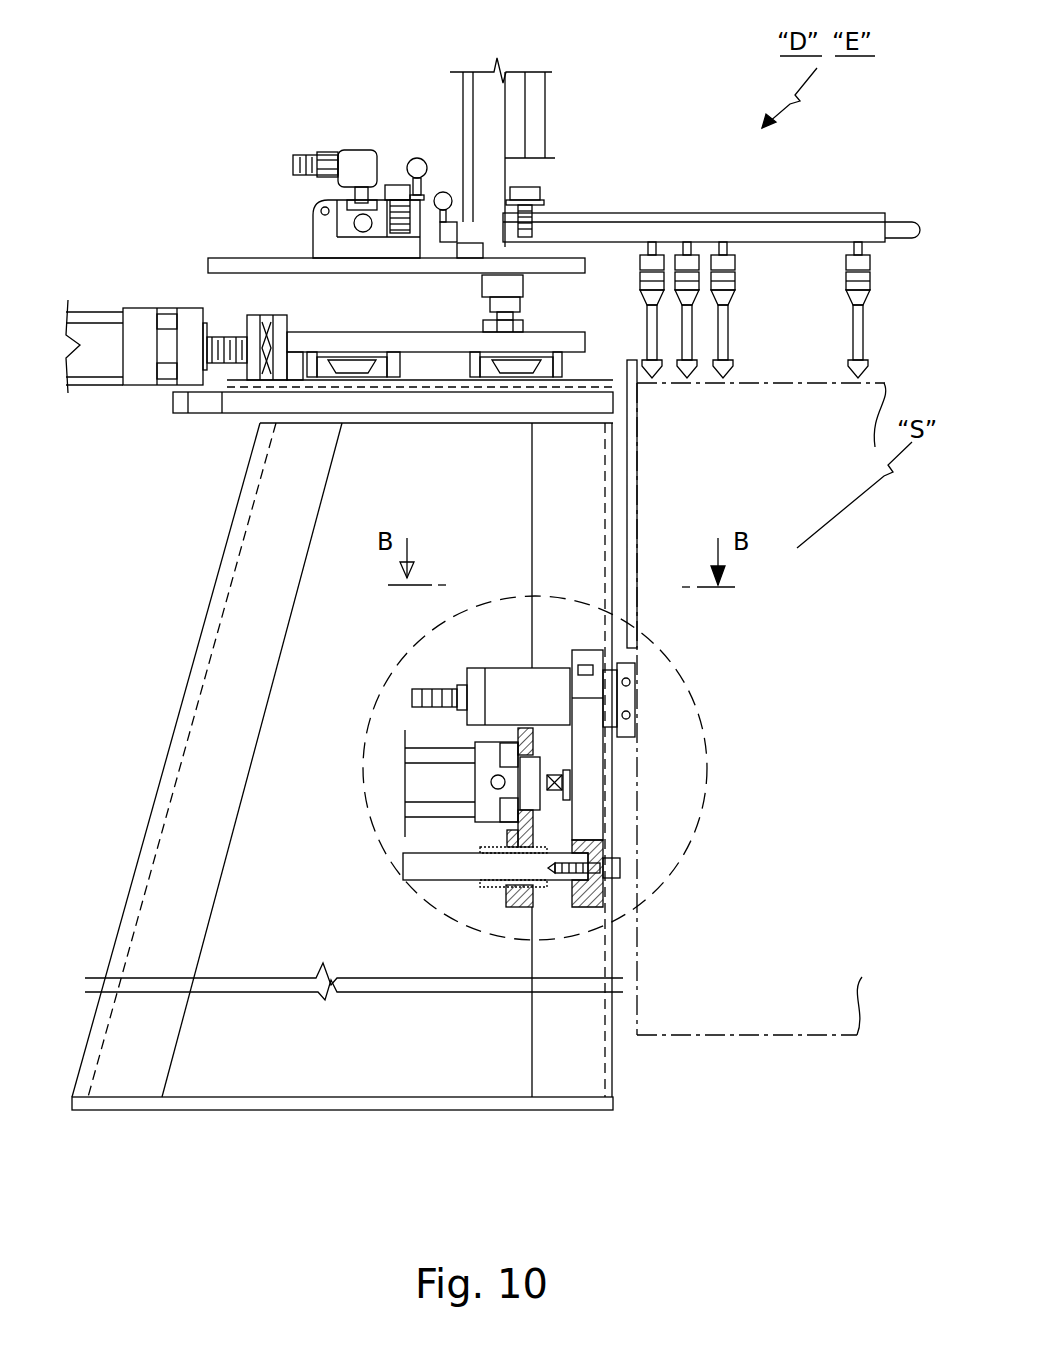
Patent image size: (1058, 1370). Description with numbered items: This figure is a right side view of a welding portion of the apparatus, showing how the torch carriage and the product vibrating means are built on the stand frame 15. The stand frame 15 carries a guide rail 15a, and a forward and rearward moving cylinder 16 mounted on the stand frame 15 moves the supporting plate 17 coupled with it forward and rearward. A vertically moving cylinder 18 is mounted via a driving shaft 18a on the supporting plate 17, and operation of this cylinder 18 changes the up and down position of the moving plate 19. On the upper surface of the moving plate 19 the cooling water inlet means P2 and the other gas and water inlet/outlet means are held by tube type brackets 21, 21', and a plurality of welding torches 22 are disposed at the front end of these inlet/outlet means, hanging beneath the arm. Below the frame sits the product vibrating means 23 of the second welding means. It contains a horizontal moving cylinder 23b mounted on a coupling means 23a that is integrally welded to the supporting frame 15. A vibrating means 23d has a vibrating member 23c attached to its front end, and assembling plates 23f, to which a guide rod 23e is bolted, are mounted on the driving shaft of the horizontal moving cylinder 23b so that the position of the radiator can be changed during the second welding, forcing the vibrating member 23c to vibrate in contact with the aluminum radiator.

The stand frame 15 is at (347, 789).
The guide rail 15a is at (686, 504).
The forward and rearward moving cylinder 16 is at (176, 388).
The supporting plate 17 is at (436, 334).
The vertically moving cylinder 18 is at (542, 152).
The driving shaft 18a is at (584, 239).
The moving plate 19 is at (383, 215).
The tube type bracket 21 is at (688, 186).
The tube type bracket 21' is at (342, 153).
The welding torches 22 is at (787, 310).
The product vibrating means 23 is at (456, 859).
The coupling means 23a is at (503, 953).
The horizontal moving cylinder 23b is at (329, 742).
The vibrating member 23c is at (711, 670).
The vibrating means 23d is at (342, 632).
The guide rod 23e is at (472, 1009).
The assembling plates 23f is at (698, 745).
The cooling water inlet means P2 is at (315, 126).